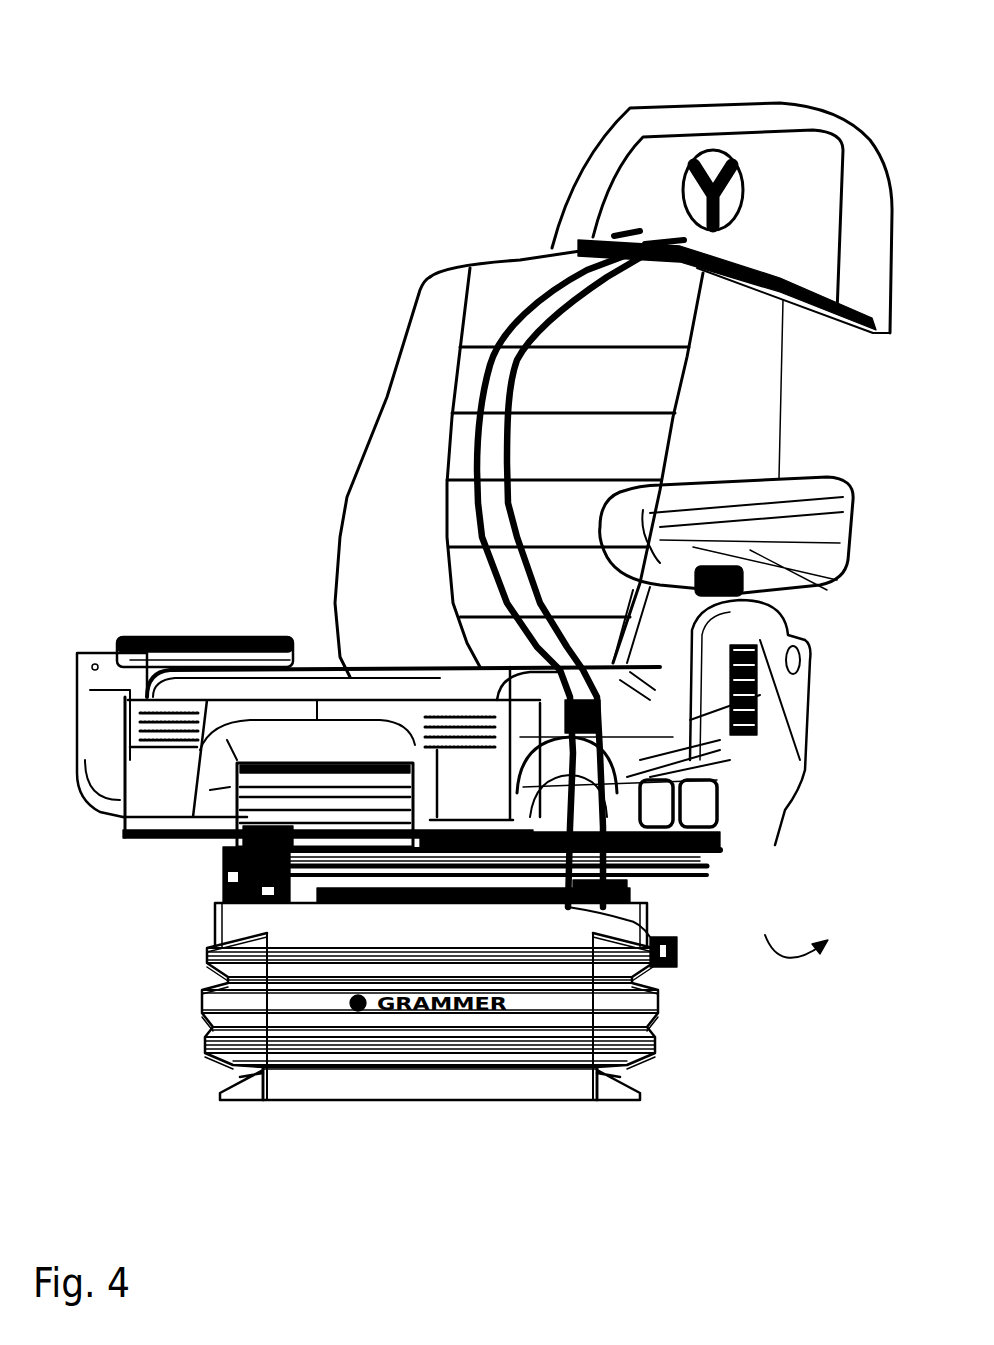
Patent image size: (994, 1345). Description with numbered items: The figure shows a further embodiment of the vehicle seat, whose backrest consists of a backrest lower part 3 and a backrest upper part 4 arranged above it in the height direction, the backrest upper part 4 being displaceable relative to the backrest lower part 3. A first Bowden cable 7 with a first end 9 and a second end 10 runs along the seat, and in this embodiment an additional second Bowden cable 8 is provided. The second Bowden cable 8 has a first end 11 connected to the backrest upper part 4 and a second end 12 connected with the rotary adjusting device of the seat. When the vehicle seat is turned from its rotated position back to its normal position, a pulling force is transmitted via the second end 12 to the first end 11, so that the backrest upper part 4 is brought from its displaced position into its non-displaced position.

The backrest lower part 3 is at (410, 418).
The backrest upper part 4 is at (722, 115).
The first Bowden cable 7 is at (502, 317).
The second Bowden cable 8 is at (540, 290).
The first end 9 is at (630, 237).
The second end 10 is at (513, 770).
The first end 11 is at (660, 237).
The second end 12 is at (597, 903).